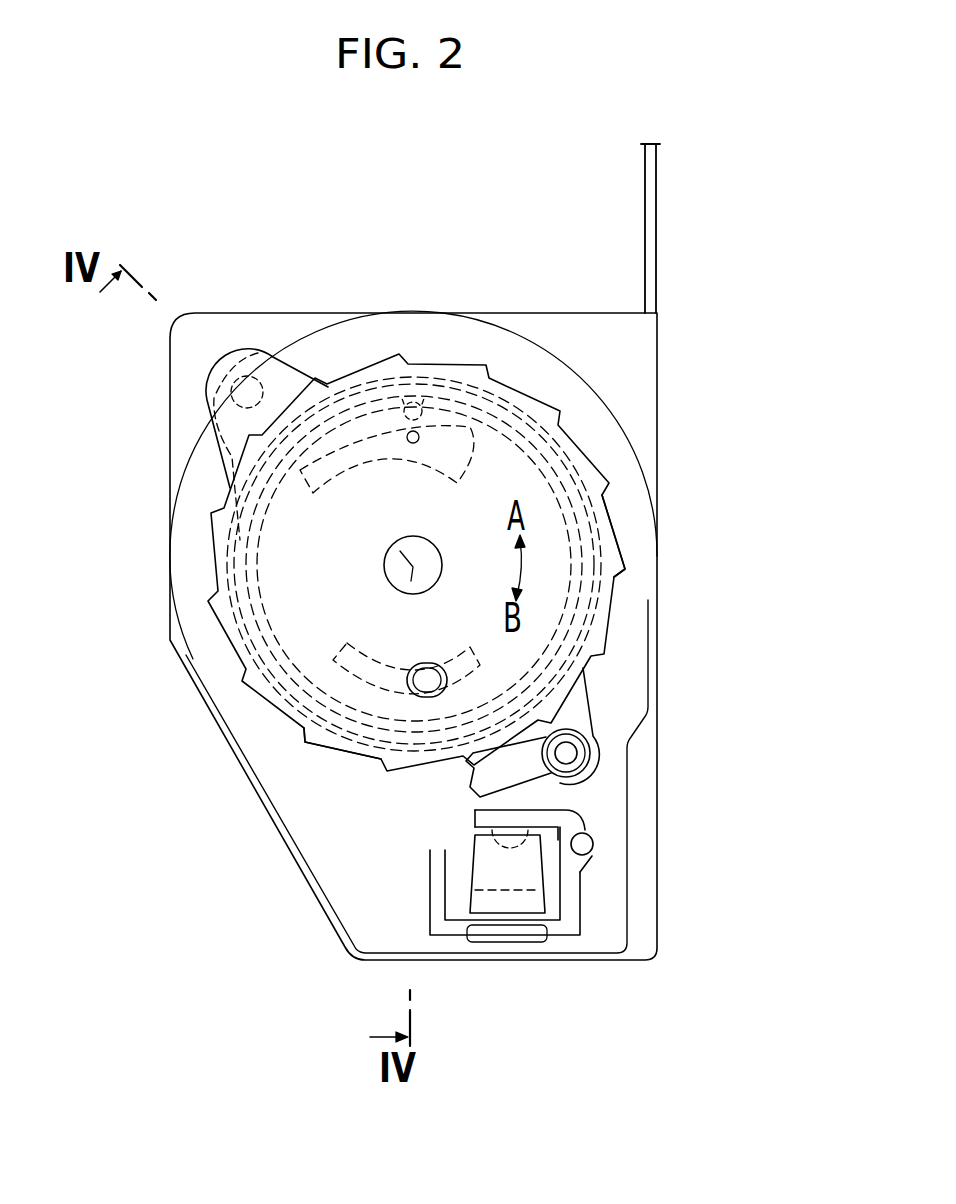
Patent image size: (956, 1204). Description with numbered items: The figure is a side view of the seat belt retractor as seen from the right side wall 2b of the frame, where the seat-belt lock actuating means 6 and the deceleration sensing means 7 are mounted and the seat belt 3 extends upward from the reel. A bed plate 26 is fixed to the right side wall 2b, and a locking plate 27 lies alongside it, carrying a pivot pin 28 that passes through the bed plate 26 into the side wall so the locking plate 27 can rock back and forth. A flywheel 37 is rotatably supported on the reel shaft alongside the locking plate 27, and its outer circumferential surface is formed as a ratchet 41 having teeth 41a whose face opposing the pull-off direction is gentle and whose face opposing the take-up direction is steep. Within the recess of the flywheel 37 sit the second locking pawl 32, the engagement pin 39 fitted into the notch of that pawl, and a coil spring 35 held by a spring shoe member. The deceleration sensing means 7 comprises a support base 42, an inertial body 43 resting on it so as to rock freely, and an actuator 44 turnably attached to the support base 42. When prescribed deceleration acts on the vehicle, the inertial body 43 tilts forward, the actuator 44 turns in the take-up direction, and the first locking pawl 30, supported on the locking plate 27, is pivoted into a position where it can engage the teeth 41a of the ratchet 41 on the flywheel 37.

The right side wall 2b is at (652, 397).
The seat belt 3 is at (646, 222).
The bed plate 26 is at (583, 383).
The ratchet 41 is at (219, 637).
The teeth 41a is at (617, 573).
The seat-belt lock actuating means 6 is at (620, 528).
The flywheel 37 is at (325, 583).
The second locking pawl 32 is at (390, 455).
The engagement pin 39 is at (416, 398).
The coil spring 35 is at (388, 657).
The locking plate 27 is at (207, 400).
The pivot pin 28 is at (236, 381).
The first locking pawl 30 is at (470, 770).
The actuator 44 is at (558, 808).
The support base 42 is at (555, 922).
The inertial body 43 is at (482, 843).
The deceleration sensing means 7 is at (598, 878).